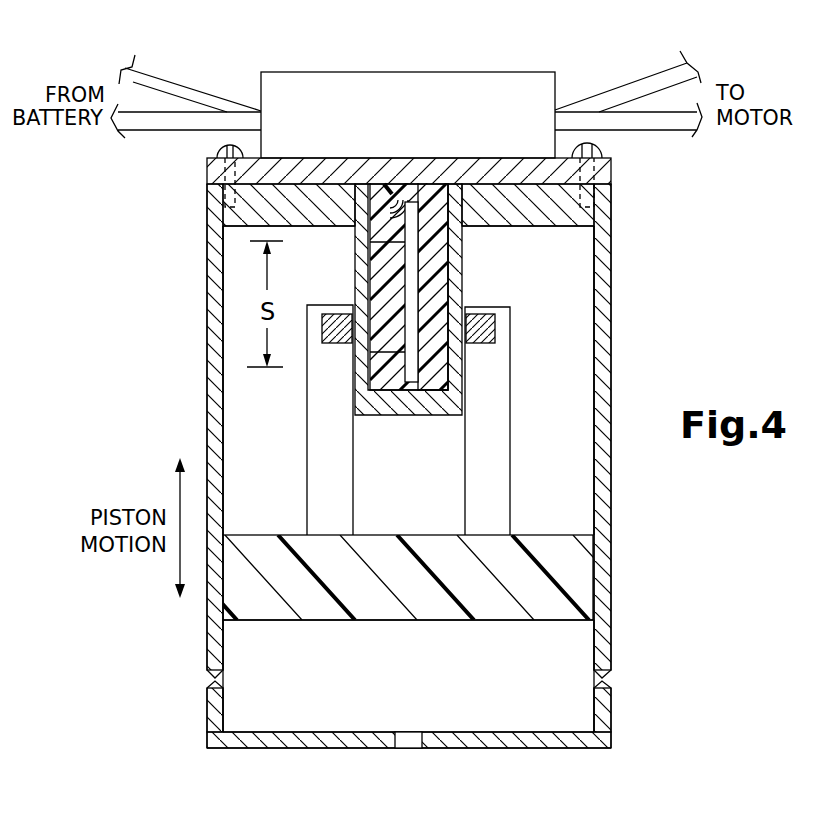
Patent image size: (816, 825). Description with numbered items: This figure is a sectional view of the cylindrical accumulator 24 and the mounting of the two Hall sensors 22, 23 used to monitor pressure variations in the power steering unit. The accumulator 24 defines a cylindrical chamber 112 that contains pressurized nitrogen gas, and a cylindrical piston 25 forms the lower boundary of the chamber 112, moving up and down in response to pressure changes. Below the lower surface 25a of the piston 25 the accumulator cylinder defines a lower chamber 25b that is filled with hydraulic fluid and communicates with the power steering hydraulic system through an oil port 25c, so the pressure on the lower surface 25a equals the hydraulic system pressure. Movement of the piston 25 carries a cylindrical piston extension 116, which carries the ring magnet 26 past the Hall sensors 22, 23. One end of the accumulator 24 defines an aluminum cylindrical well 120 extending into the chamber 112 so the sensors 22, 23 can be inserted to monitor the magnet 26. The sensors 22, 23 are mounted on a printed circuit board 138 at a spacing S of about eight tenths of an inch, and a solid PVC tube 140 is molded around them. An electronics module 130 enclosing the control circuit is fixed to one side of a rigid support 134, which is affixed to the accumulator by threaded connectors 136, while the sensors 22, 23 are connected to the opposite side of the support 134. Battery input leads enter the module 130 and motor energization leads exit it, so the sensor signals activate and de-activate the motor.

The electronics module 130 is at (455, 108).
The threaded connectors 136 is at (215, 148).
The rigid support 134 is at (602, 168).
The PVC tube 140 is at (438, 250).
The cylindrical well 120 is at (457, 268).
The printed circuit board 138 is at (413, 300).
The Hall sensor 23 is at (386, 249).
The Hall sensor 22 is at (385, 358).
The ring magnet 26 is at (482, 338).
The cylindrical accumulator 24 is at (602, 368).
The cylindrical piston extension 116 is at (330, 478).
The cylindrical chamber 112 is at (583, 466).
The cylindrical piston 25 is at (528, 583).
The lower surface of the piston 25a is at (278, 622).
The lower chamber 25b is at (435, 692).
The oil port 25c is at (408, 738).